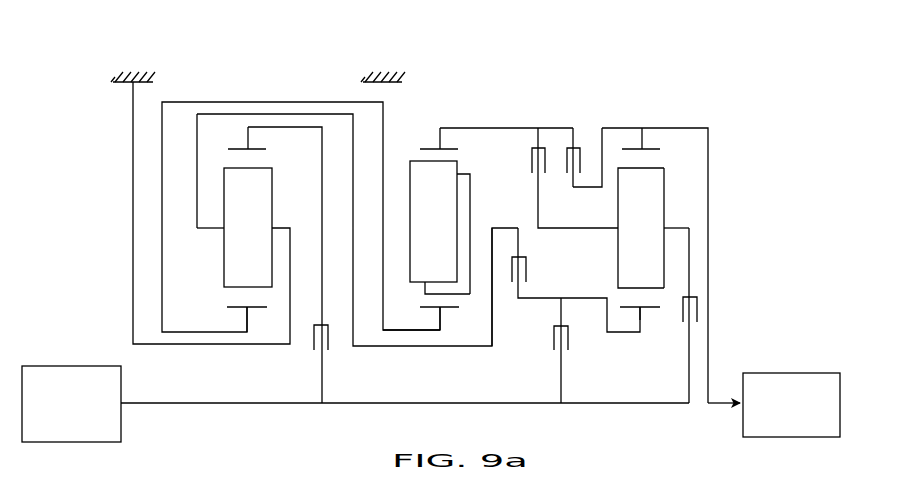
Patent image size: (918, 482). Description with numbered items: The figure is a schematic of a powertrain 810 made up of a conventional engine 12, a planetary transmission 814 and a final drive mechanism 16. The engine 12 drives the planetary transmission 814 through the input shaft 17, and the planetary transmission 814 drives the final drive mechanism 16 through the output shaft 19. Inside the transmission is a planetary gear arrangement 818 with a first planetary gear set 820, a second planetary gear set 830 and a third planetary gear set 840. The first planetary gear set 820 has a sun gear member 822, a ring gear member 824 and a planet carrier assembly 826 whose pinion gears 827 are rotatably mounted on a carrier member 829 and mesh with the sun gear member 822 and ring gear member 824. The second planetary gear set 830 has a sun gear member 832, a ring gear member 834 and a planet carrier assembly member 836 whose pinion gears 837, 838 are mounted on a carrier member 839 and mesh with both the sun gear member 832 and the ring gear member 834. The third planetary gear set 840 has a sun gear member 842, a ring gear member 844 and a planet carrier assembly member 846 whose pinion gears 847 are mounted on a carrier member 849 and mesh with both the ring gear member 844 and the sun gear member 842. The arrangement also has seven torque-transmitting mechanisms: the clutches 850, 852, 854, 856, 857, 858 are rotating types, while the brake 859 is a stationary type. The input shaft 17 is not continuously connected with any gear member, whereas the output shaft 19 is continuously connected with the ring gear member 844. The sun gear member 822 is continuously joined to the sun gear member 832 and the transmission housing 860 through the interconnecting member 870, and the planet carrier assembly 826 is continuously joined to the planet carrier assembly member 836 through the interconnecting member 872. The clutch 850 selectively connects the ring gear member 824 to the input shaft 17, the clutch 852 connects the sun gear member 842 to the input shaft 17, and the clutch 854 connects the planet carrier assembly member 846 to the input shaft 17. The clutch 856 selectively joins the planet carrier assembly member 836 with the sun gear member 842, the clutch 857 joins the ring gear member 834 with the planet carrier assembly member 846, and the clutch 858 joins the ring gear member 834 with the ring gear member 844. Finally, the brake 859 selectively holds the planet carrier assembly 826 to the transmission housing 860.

The engine 12 is at (88, 350).
The final drive mechanism 16 is at (778, 357).
The input shaft 17 is at (146, 405).
The output shaft 19 is at (712, 405).
The powertrain 810 is at (120, 172).
The planetary transmission 814 is at (467, 92).
The planetary gear arrangement 818 is at (677, 95).
The first planetary gear set 820 is at (237, 312).
The sun gear member 822 is at (257, 308).
The ring gear member 824 is at (237, 148).
The planet carrier assembly 826 is at (219, 233).
The pinion gears 827 is at (248, 227).
The carrier member 829 is at (206, 232).
The second planetary gear set 830 is at (430, 312).
The sun gear member 832 is at (452, 308).
The ring gear member 834 is at (432, 148).
The planet carrier assembly member 836 is at (479, 217).
The pinion gears 837 is at (433, 221).
The pinion gears 838 is at (465, 296).
The carrier member 839 is at (489, 226).
The third planetary gear set 840 is at (632, 312).
The sun gear member 842 is at (651, 308).
The ring gear member 844 is at (634, 148).
The planet carrier assembly member 846 is at (675, 218).
The pinion gears 847 is at (641, 228).
The carrier member 849 is at (680, 227).
The clutch 850 is at (329, 352).
The clutch 852 is at (571, 352).
The clutch 854 is at (700, 300).
The clutch 856 is at (531, 254).
The clutch 857 is at (524, 146).
The clutch 858 is at (562, 146).
The brake 859 is at (110, 80).
The transmission housing 860 is at (117, 74).
The interconnecting member 870 is at (268, 102).
The interconnecting member 872 is at (310, 114).